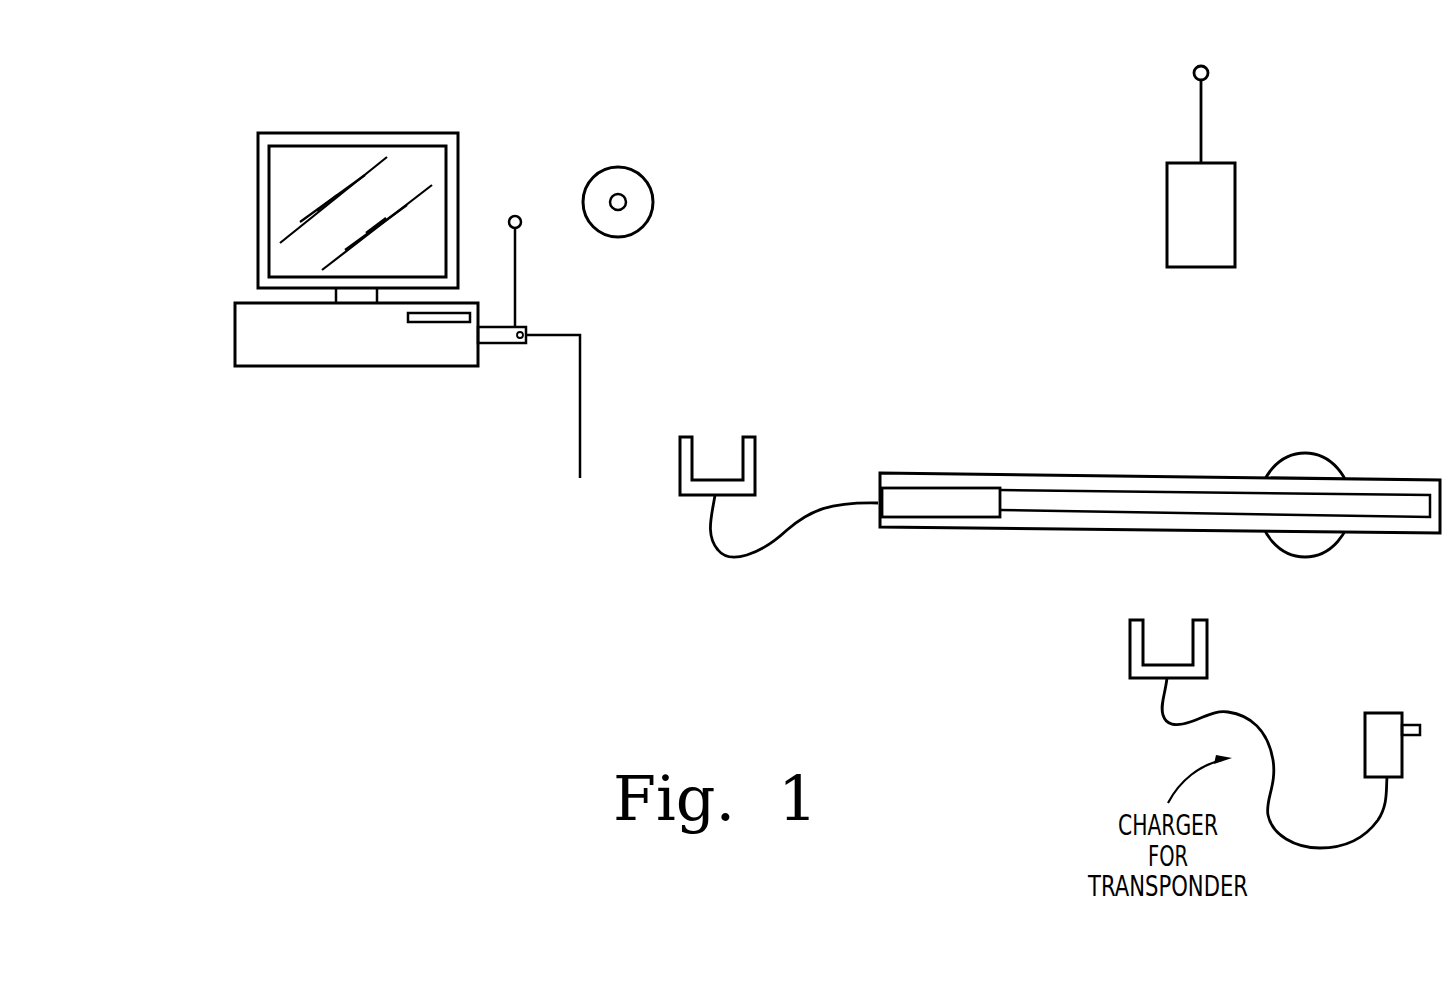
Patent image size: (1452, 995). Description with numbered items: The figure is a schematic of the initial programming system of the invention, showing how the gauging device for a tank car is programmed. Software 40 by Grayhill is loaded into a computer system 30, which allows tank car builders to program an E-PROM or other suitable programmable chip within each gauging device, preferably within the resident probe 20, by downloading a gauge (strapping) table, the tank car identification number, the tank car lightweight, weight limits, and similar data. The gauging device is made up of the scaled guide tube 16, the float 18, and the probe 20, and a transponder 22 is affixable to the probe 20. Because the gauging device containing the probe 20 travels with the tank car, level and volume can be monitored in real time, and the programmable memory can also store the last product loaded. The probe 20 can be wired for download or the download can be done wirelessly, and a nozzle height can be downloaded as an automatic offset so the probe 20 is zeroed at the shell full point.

The computer system 30 is at (211, 116).
The software 40 is at (626, 201).
The transponder 22 is at (1235, 188).
The probe 20 is at (1052, 498).
The scaled guide tube 16 is at (1386, 480).
The float 18 is at (1313, 558).